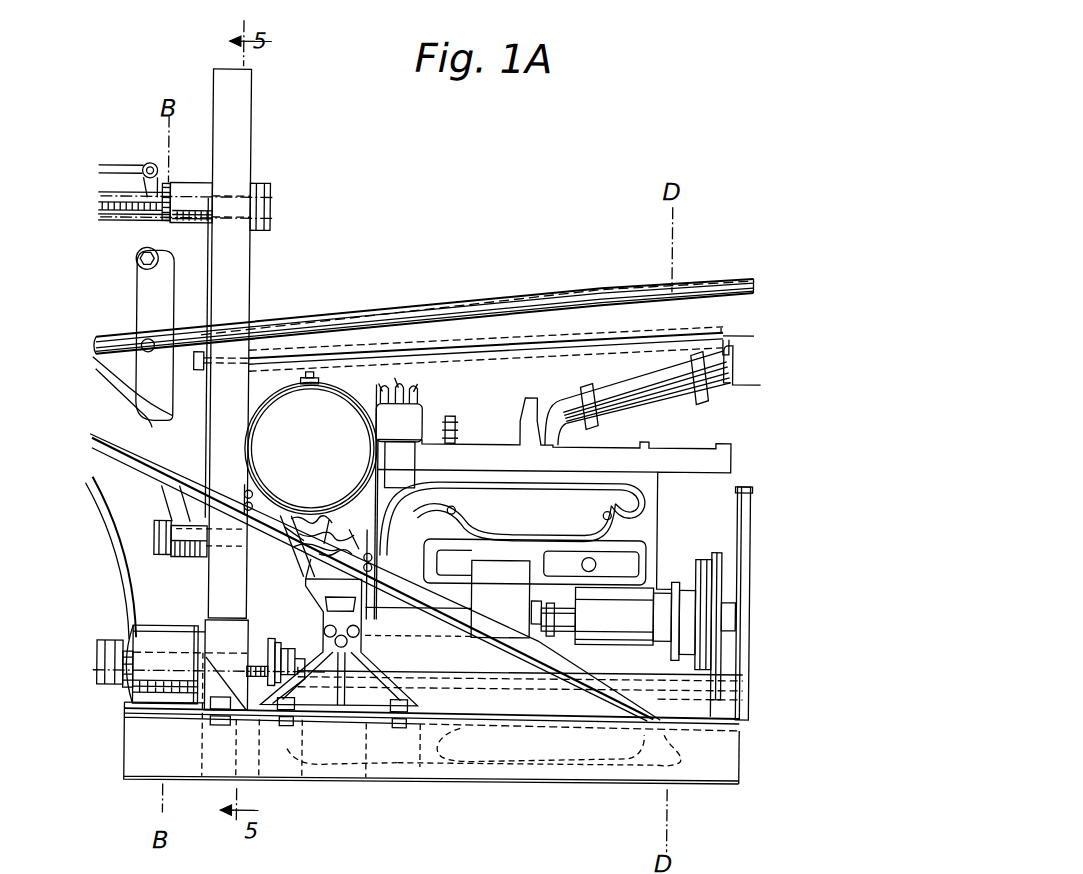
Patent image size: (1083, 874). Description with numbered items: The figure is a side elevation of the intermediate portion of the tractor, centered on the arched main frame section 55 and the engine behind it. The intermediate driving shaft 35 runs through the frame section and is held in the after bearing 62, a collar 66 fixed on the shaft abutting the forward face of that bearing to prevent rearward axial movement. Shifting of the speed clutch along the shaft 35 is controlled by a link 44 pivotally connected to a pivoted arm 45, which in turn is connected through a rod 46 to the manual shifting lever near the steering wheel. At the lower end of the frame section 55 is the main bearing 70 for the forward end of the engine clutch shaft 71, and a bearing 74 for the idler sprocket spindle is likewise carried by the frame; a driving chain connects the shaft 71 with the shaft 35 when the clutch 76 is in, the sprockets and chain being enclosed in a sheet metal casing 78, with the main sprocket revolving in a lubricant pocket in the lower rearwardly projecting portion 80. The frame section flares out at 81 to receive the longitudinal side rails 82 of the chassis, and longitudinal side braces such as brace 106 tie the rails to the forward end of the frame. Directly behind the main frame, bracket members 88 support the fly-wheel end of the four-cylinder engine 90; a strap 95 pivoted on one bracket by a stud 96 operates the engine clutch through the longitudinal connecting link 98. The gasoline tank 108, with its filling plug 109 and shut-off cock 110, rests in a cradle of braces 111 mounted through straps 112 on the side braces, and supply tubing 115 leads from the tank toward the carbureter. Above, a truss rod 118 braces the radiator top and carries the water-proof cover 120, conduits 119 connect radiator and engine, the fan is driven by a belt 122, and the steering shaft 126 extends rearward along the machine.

The intermediate driving shaft 35 is at (93, 217).
The link 44 is at (105, 171).
The pivoted arm 45 is at (145, 293).
The rod 46 is at (325, 316).
The arched main frame section 55 is at (117, 553).
The after bearing 62 is at (186, 202).
The collar 66 is at (160, 215).
The main bearing 70 is at (143, 677).
The engine clutch shaft 71 is at (254, 665).
The bearing 74 is at (182, 560).
The clutch 76 is at (290, 668).
The sheet metal casing 78 is at (245, 147).
The lower rearwardly projecting portion 80 is at (217, 634).
The flanged portion 81 is at (129, 711).
The longitudinal side rails 82 is at (140, 760).
The bracket members 88 is at (335, 707).
The engine 90 is at (472, 460).
The strap 95 is at (289, 641).
The stud 96 is at (292, 676).
The longitudinal connecting link 98 is at (564, 685).
The longitudinal side brace 106 is at (109, 445).
The gasoline tank 108 is at (333, 417).
The filling plug 109 is at (300, 382).
The shut-off cock 110 is at (318, 525).
The braces 111 is at (280, 520).
The straps 112 is at (360, 502).
The supply tubing 115 is at (312, 538).
The truss rod 118 is at (587, 344).
The conduits 119 is at (685, 402).
The water-proof cover 120 is at (438, 343).
The belt 122 is at (746, 539).
The steering shaft 126 is at (477, 305).